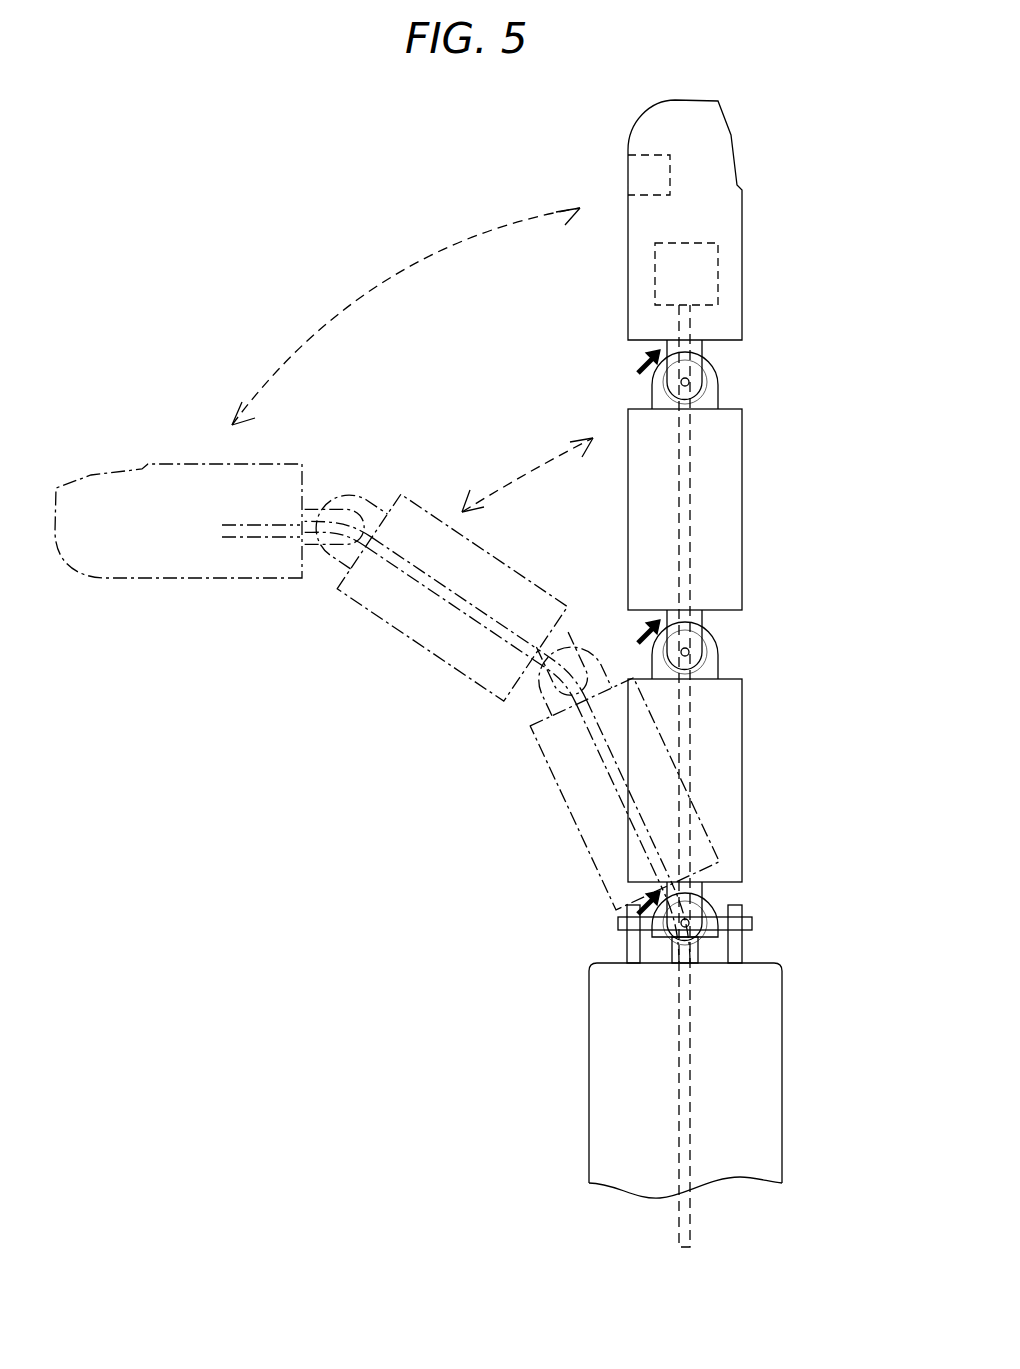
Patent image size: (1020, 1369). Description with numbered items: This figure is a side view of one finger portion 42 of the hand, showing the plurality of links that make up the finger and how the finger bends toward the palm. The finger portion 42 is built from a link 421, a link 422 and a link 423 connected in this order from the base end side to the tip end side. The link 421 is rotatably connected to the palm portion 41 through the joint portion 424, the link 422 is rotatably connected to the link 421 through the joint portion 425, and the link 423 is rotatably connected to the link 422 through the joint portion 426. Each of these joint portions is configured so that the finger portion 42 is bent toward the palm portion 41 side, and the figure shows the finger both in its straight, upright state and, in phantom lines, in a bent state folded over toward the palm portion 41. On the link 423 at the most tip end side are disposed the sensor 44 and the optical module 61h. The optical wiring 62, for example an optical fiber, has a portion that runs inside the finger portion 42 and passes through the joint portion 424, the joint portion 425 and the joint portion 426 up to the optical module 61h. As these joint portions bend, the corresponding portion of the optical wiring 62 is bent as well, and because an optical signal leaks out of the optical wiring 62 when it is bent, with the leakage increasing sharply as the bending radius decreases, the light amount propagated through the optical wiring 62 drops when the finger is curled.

The palm portion 41 is at (603, 1043).
The finger portion 42 is at (465, 393).
The sensor 44 is at (655, 174).
The optical module 61h is at (702, 279).
The optical wiring 62 is at (695, 497).
The link 421 is at (722, 765).
The link 422 is at (720, 562).
The link 423 is at (733, 292).
The joint portion 424 is at (733, 940).
The joint portion 425 is at (718, 652).
The joint portion 426 is at (718, 383).